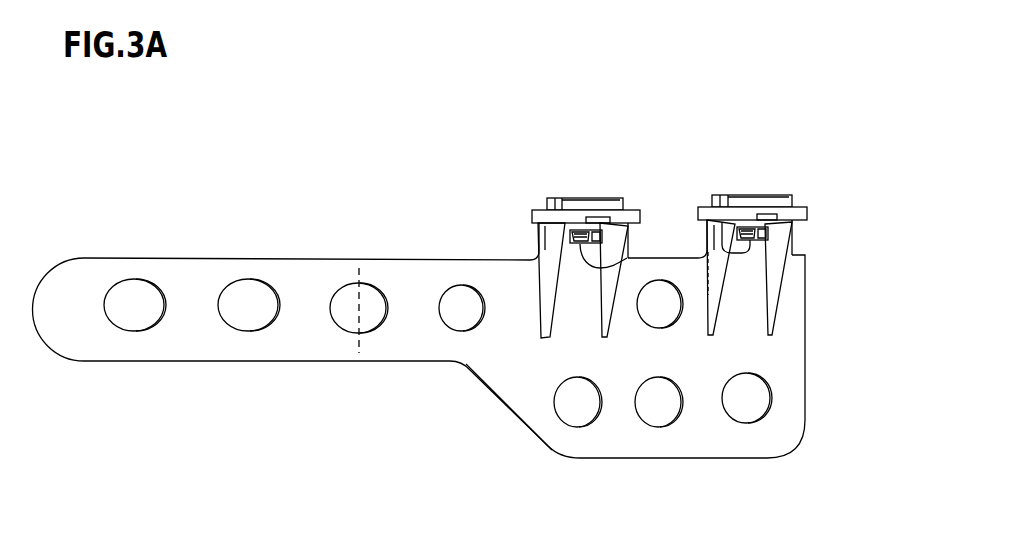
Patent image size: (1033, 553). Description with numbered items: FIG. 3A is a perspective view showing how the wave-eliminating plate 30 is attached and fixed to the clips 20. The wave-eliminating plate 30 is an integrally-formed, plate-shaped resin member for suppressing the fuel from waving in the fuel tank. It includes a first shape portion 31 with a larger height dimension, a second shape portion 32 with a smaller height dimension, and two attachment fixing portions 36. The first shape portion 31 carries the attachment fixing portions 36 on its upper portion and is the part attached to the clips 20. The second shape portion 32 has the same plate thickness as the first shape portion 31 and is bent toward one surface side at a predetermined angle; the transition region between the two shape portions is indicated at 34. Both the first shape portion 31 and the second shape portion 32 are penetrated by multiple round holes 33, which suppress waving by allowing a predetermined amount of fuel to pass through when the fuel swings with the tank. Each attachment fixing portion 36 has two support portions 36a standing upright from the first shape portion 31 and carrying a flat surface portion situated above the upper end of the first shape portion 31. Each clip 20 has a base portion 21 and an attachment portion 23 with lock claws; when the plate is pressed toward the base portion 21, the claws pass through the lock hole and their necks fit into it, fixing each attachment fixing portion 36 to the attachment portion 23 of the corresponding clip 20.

The clip 20 is at (671, 224).
The base portion 21 is at (640, 212).
The attachment portion 23 is at (625, 240).
The wave-eliminating plate 30 is at (442, 350).
The first shape portion 31 is at (643, 470).
The second shape portion 32 is at (240, 366).
The round hole 33 is at (223, 298).
The inclined portion 34 is at (505, 412).
The attachment fixing portion 36 is at (594, 314).
The support portion 36a is at (550, 245).